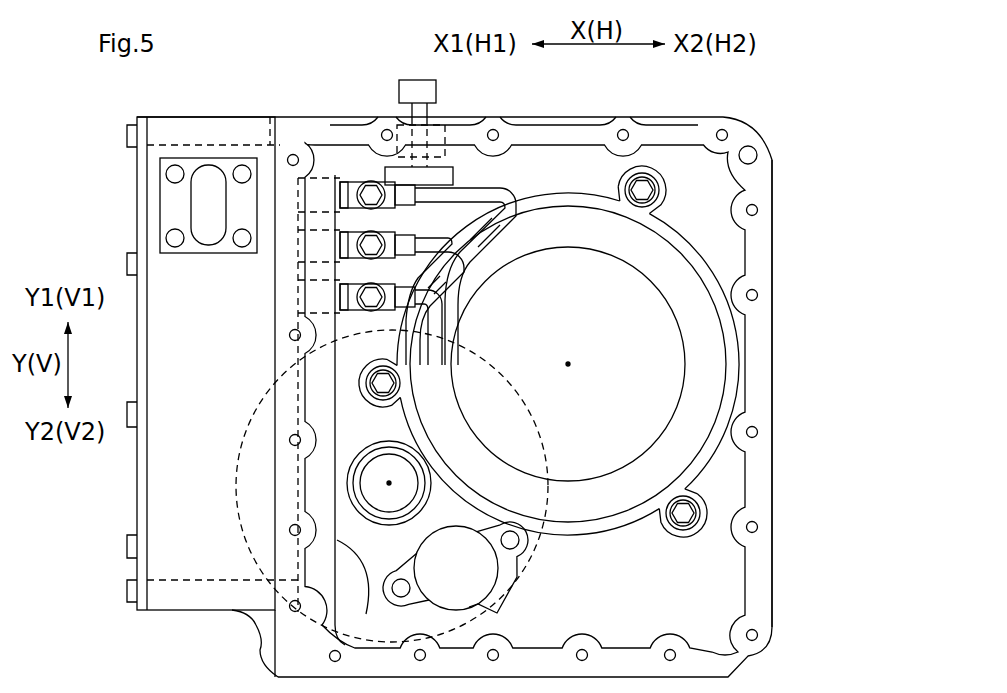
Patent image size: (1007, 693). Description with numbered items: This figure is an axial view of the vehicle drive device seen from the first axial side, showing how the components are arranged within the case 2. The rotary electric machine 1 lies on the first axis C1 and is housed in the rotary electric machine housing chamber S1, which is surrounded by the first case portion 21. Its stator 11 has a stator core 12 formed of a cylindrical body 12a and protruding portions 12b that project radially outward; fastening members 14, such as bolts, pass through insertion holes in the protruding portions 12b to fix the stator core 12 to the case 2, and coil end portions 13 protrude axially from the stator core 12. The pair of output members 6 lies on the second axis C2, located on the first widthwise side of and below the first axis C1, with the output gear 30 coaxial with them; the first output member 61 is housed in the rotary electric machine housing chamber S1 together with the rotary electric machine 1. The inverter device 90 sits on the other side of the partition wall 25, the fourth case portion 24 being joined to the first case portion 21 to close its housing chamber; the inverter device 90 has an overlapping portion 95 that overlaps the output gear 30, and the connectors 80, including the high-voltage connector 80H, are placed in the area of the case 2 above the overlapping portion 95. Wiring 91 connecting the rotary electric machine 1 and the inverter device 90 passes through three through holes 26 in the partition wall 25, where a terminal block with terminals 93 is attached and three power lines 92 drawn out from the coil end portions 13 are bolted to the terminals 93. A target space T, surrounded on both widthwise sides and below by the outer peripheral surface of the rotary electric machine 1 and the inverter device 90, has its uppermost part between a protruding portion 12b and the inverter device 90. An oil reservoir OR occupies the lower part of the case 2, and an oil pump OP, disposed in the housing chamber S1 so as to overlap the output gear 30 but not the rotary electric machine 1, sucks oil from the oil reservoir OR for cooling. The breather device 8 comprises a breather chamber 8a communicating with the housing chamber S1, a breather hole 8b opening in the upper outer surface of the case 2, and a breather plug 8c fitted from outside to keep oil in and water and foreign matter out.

The rotary electric machine 1 is at (680, 212).
The case 2 is at (776, 453).
The output members 6 is at (349, 485).
The breather device 8 is at (415, 74).
The breather chamber 8a is at (456, 172).
The breather hole 8b is at (447, 130).
The breather plug 8c is at (402, 82).
The stator 11 is at (716, 271).
The stator core 12 is at (586, 193).
The body 12a is at (740, 367).
The protruding portions 12b is at (370, 402).
The coil end portions 13 is at (590, 512).
The fastening members 14 is at (641, 196).
The first case portion 21 is at (774, 310).
The fourth case portion 24 is at (135, 210).
The partition wall 25 is at (360, 581).
The through holes 26 is at (271, 142).
The output gear 30 is at (232, 485).
The first output member 61 is at (294, 483).
The connectors 80 is at (133, 205).
The high-voltage connector 80H is at (198, 207).
The inverter device 90 is at (215, 138).
The wiring 91 is at (482, 185).
The power lines 92 is at (470, 240).
The terminals 93 is at (352, 180).
The overlapping portion 95 is at (257, 505).
The first axis C1 is at (574, 368).
The second axis C2 is at (389, 483).
The oil pump OP is at (483, 562).
The oil reservoir OR is at (600, 623).
The rotary electric machine housing chamber S1 is at (693, 182).
The target space T is at (370, 338).